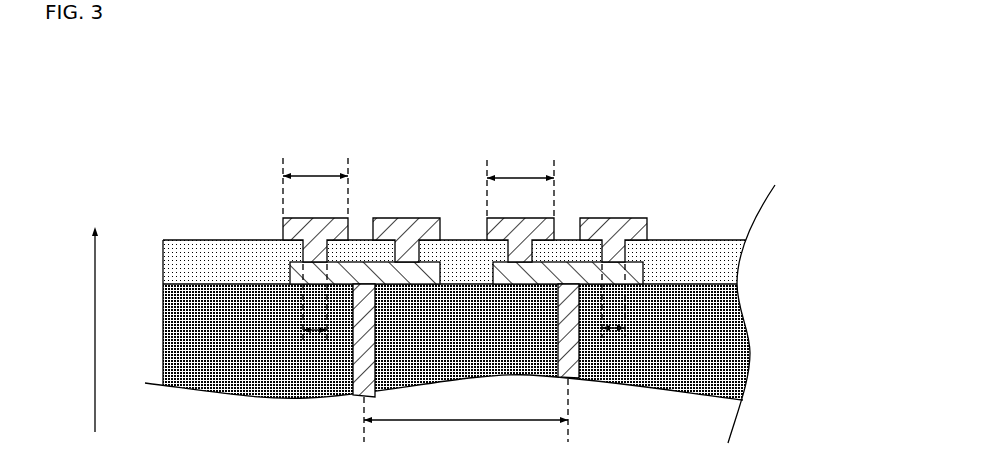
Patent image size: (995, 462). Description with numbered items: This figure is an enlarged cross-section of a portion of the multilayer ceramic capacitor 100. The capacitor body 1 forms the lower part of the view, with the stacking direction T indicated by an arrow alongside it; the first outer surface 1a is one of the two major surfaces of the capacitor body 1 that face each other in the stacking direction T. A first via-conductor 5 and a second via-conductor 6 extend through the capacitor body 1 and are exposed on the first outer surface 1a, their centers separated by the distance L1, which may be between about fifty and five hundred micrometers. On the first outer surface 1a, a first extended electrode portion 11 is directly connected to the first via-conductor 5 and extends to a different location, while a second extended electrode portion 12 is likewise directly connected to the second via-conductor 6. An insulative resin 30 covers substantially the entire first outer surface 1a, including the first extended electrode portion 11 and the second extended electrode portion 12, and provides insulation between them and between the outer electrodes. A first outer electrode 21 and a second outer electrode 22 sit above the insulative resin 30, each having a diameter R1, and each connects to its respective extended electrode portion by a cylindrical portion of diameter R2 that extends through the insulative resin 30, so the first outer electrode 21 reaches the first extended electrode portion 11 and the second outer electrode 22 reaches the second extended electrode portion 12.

The multilayer ceramic capacitor 100 is at (215, 166).
The capacitor body 1 is at (154, 303).
The first outer surface 1a is at (210, 276).
The first extended electrode portion 11 is at (288, 268).
The second extended electrode portion 12 is at (647, 270).
The first outer electrode 21 is at (341, 238).
The second outer electrode 22 is at (555, 230).
The insulative resin 30 is at (702, 248).
The first via-conductor 5 is at (352, 380).
The second via-conductor 6 is at (580, 362).
The stacking direction T is at (95, 317).
The diameter of outer electrode R1 is at (418, 179).
The diameter of cylindrical portion R2 is at (317, 338).
The distance between via-conductor centers L1 is at (466, 414).